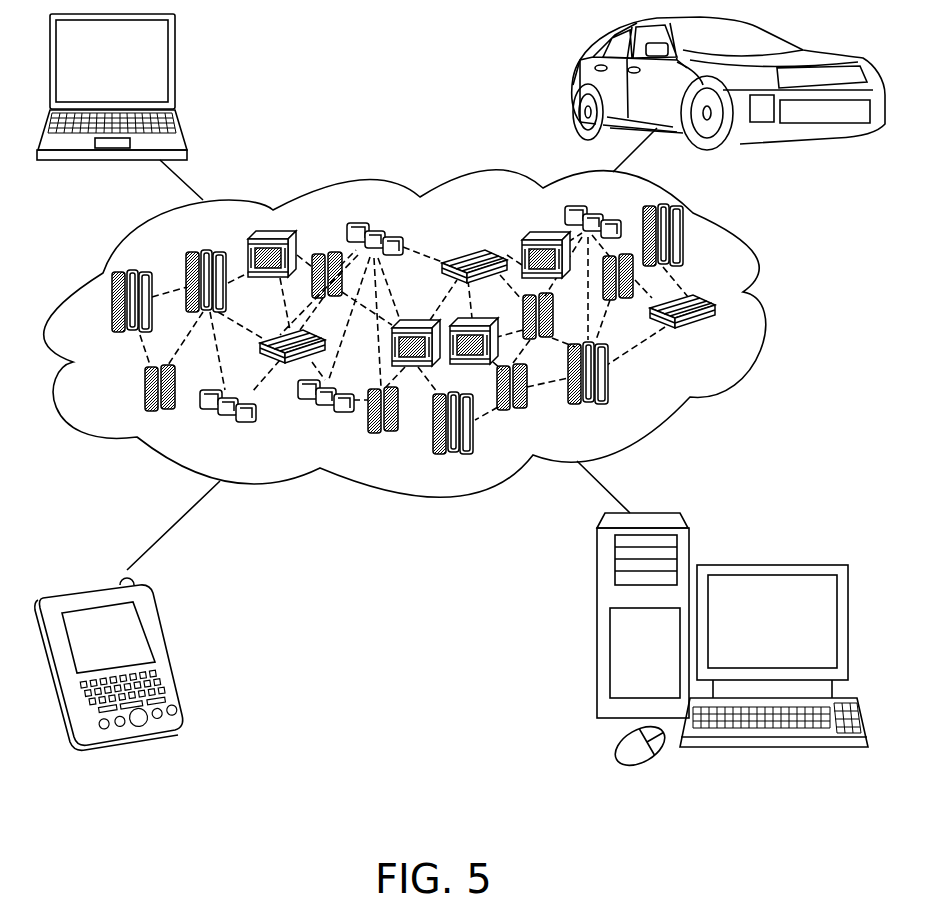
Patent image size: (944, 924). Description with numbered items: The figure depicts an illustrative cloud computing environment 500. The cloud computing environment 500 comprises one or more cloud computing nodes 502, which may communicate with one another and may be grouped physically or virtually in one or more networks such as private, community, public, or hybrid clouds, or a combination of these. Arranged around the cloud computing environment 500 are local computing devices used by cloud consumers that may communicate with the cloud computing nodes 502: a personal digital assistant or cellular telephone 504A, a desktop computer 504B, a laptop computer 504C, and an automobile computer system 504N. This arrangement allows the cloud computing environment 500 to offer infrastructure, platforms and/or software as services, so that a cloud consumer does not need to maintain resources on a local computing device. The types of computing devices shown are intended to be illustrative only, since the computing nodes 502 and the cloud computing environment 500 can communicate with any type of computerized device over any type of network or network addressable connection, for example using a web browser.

The cloud computing environment 500 is at (725, 305).
The cloud computing nodes 502 is at (715, 335).
The personal digital assistant or cellular telephone 504A is at (156, 618).
The desktop computer 504B is at (760, 565).
The laptop computer 504C is at (174, 44).
The automobile computer system 504N is at (577, 87).